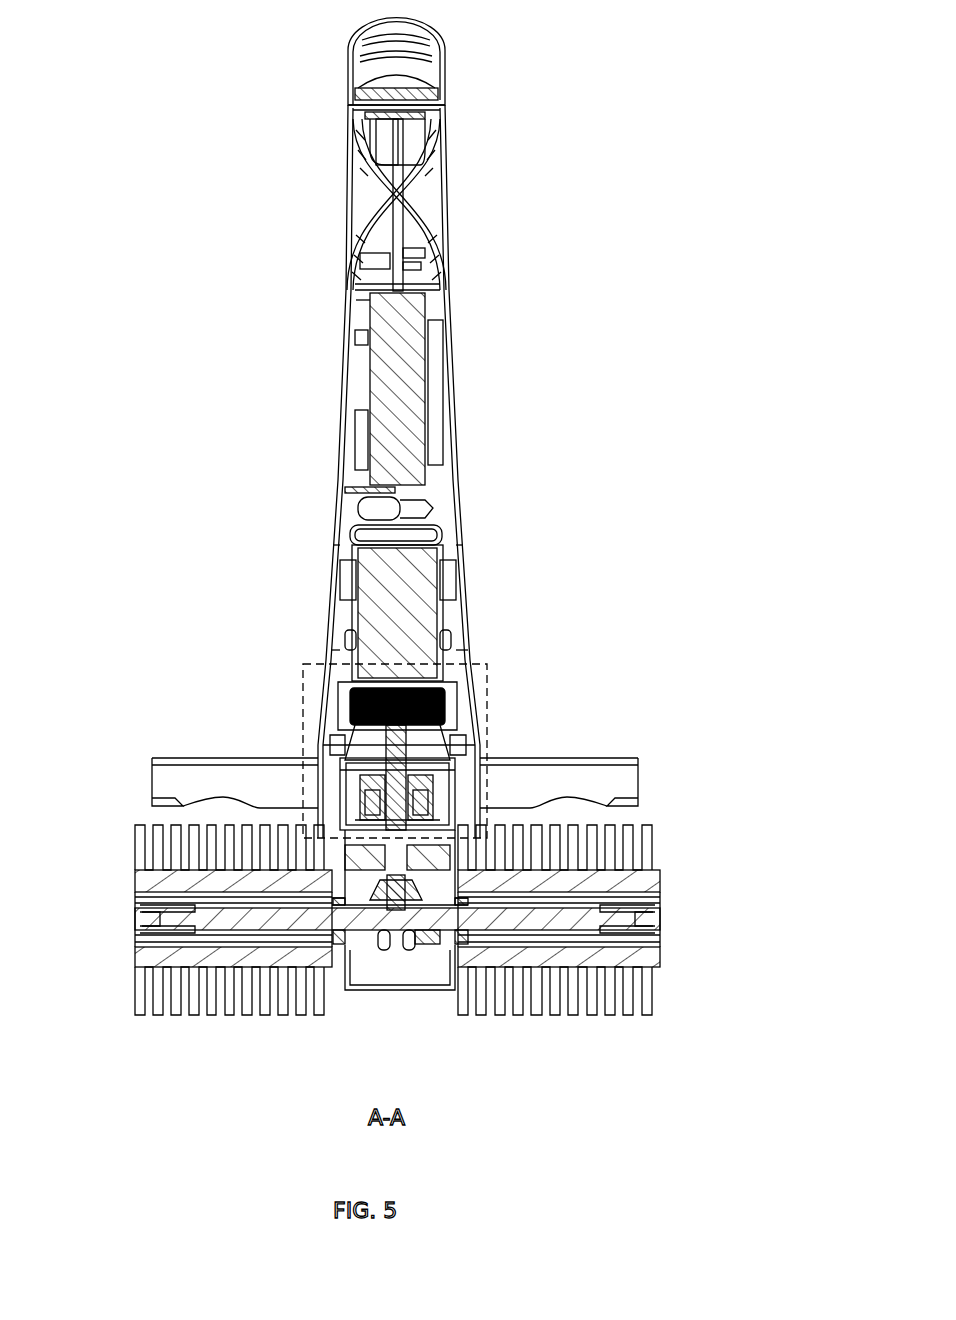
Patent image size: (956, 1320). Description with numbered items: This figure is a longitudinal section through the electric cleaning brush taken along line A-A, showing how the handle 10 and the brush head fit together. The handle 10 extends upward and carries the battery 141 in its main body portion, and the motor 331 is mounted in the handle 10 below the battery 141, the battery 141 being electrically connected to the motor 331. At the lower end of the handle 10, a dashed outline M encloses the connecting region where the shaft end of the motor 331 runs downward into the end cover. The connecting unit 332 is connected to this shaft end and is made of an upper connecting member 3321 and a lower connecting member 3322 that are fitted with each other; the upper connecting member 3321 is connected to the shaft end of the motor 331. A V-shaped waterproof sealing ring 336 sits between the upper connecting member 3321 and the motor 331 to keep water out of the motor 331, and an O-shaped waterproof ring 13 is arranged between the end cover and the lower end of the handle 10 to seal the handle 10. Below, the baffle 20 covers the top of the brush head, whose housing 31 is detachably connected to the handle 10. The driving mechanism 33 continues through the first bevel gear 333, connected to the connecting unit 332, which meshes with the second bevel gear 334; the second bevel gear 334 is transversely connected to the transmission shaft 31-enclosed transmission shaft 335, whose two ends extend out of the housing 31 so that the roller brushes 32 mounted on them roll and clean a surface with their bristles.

The handle 10 is at (447, 365).
The battery 141 is at (395, 378).
The motor 331 is at (388, 608).
The O-shaped waterproof ring 13 is at (473, 738).
The V-shaped waterproof sealing ring 336 is at (472, 747).
The drive module M is at (487, 664).
The connecting unit 332 is at (258, 658).
The upper connecting member 3321 is at (345, 760).
The lower connecting member 3322 is at (355, 803).
The baffle 20 is at (165, 775).
The roller brushes 32 is at (150, 993).
The housing 31 is at (342, 903).
The transmission shaft 335 is at (285, 915).
The driving mechanism 33 is at (408, 935).
The first bevel gear 333 is at (383, 950).
The second bevel gear 334 is at (425, 944).